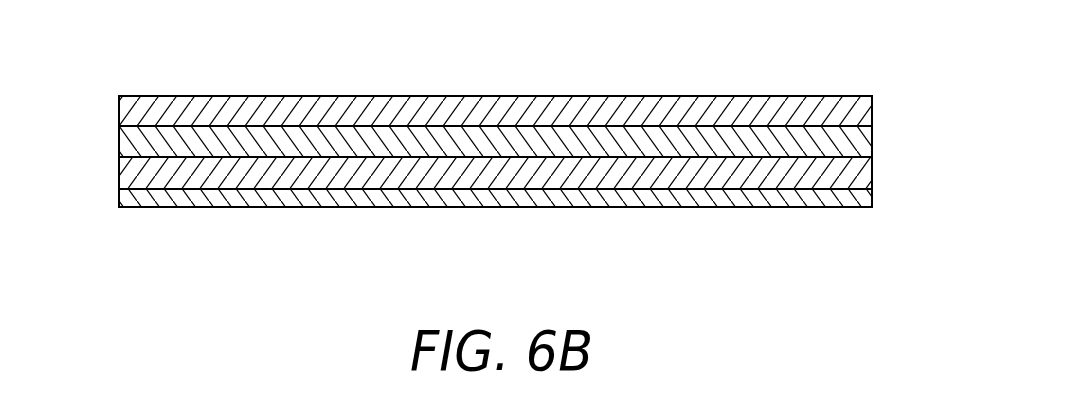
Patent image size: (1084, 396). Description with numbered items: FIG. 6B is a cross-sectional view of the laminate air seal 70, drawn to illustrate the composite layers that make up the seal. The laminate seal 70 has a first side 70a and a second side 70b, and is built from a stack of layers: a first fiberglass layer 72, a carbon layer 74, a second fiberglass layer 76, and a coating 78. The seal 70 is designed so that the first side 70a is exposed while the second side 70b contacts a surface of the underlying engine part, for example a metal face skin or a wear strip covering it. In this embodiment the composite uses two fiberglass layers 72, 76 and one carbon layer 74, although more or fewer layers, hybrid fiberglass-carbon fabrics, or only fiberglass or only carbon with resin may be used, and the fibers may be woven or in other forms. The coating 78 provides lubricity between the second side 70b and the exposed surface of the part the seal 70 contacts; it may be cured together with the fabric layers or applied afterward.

The laminate air seal 70 is at (100, 207).
The first side 70a is at (203, 95).
The second side 70b is at (190, 207).
The first fiberglass layer 72 is at (745, 105).
The carbon layer 74 is at (868, 142).
The second fiberglass layer 76 is at (865, 170).
The coating 78 is at (712, 200).